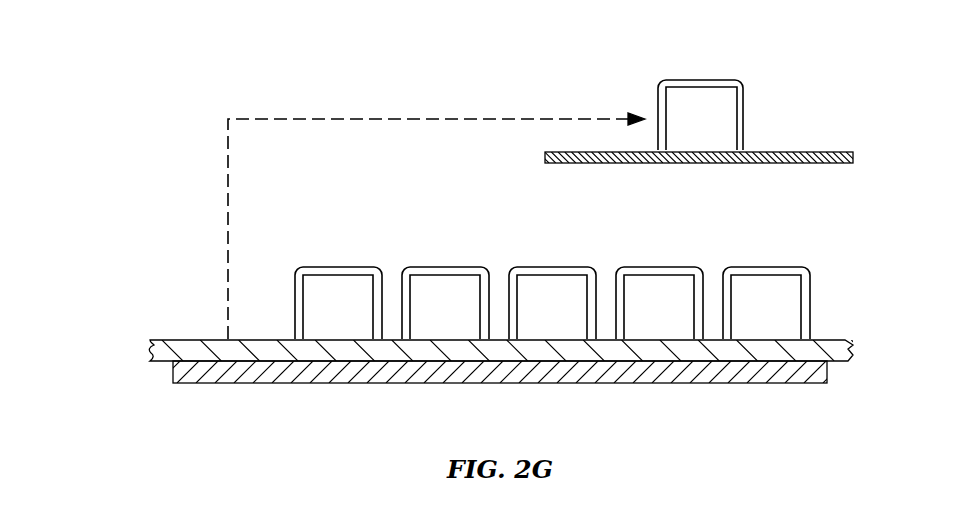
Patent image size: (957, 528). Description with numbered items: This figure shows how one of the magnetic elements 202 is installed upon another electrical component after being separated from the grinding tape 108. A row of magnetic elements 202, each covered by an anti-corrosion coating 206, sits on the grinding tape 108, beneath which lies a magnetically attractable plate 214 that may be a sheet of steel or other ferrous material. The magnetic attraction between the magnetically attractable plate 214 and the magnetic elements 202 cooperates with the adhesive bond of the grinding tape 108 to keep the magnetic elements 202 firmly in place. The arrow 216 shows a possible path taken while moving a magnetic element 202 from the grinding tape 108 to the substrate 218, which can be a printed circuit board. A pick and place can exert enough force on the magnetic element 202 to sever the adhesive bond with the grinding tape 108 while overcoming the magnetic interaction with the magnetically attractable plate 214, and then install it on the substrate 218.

The grinding tape 108 is at (150, 345).
The magnetic elements 202 is at (719, 134).
The anti-corrosion coating 206 is at (745, 97).
The magnetically attractable plate 214 is at (173, 376).
The arrow 216 is at (436, 212).
The substrate 218 is at (545, 153).